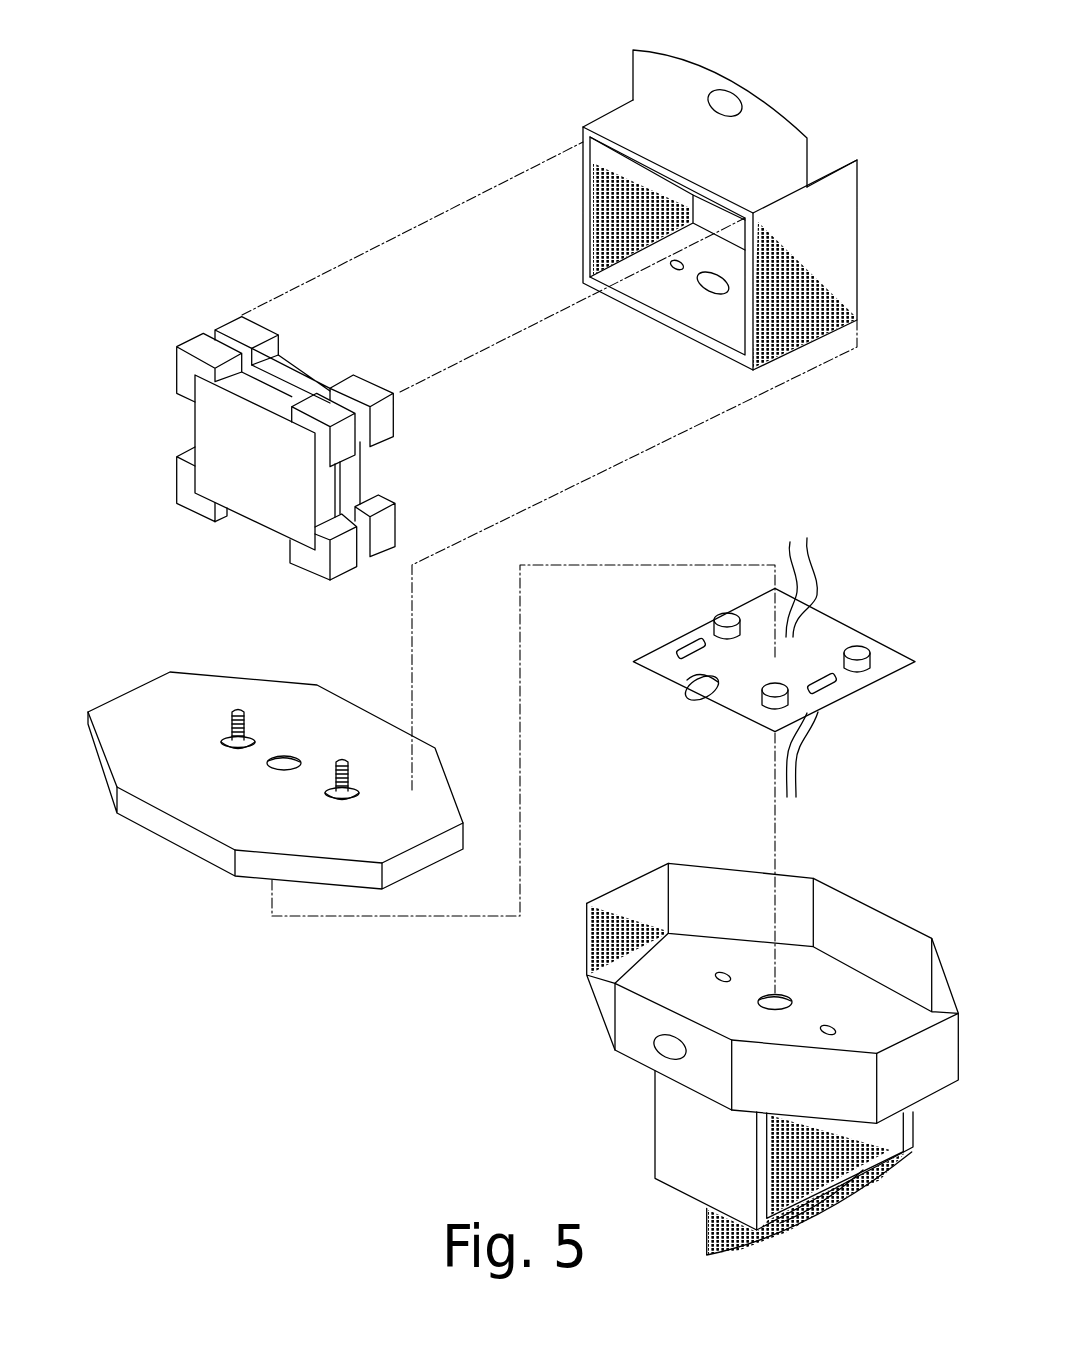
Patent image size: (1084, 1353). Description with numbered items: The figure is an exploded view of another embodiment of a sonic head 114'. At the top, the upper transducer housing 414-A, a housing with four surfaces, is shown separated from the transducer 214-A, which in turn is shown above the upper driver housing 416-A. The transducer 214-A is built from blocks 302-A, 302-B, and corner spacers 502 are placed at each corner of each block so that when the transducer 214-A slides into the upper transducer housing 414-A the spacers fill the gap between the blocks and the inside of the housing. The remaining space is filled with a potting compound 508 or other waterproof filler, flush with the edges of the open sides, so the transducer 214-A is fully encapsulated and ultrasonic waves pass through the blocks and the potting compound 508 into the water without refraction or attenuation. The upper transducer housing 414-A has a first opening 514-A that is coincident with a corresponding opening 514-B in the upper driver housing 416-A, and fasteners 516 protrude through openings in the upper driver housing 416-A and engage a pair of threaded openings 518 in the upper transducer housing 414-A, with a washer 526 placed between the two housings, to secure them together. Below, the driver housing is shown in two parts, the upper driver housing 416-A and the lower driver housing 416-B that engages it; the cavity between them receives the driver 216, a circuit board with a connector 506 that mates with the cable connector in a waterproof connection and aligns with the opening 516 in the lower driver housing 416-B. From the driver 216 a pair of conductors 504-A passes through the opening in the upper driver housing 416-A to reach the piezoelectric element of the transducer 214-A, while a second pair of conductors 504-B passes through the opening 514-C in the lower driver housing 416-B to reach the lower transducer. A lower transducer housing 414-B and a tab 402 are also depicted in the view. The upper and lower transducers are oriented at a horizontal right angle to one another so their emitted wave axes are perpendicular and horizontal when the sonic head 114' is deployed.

The sonic head 114' is at (97, 1130).
The transducer 214-A is at (176, 262).
The driver 216 is at (877, 638).
The block 302-A is at (378, 457).
The block 302-B is at (195, 414).
The mounting tab 402 is at (722, 82).
The upper transducer housing 414-A is at (583, 255).
The housing portion 414-B is at (653, 1157).
The upper driver housing 416-A is at (220, 868).
The lower driver housing 416-B is at (587, 940).
The corner spacer 502 is at (395, 420).
The conductors 504-A is at (807, 560).
The conductors 504-B is at (798, 770).
The connector 506 is at (701, 703).
The potting compound 508 is at (863, 1172).
The first opening 514-A is at (713, 293).
The opening 514-B is at (284, 772).
The opening 514-C is at (771, 992).
The fastener 516 is at (222, 736).
The threaded opening 518 is at (677, 271).
The washer 526 is at (343, 804).